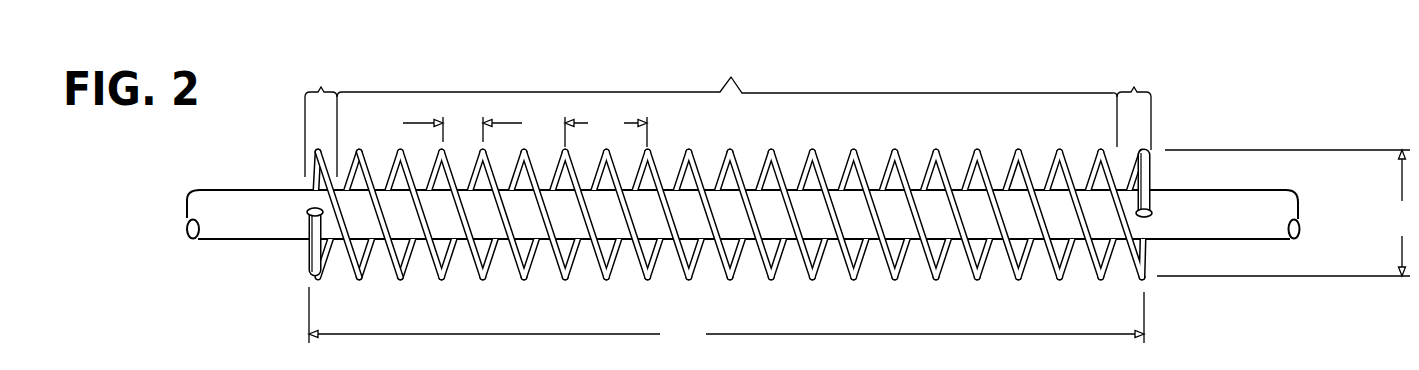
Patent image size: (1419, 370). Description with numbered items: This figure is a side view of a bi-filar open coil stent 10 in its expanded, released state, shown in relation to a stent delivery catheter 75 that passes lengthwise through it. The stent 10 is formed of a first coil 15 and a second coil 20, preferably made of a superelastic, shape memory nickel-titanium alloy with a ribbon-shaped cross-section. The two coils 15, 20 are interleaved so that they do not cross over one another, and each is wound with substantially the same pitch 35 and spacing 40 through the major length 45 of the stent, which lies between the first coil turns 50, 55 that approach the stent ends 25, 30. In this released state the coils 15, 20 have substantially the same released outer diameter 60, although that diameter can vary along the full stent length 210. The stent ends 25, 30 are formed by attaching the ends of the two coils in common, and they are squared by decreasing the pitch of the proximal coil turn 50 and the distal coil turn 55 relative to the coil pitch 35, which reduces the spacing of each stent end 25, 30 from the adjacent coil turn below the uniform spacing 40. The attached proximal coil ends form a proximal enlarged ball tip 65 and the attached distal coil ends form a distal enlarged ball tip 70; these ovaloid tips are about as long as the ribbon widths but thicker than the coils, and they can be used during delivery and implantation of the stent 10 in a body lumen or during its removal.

The bi-filar open coil stent 10 is at (862, 150).
The first coil 15 is at (352, 266).
The second coil 20 is at (400, 278).
The first or proximal stent end 25 is at (298, 262).
The second or distal stent end 30 is at (1157, 183).
The pitch 35 is at (606, 129).
The spacing 40 is at (462, 126).
The major length 45 is at (727, 70).
The first or proximal coil turn 50 is at (321, 118).
The second or distal coil turn 55 is at (1134, 108).
The released outer diameter 60 is at (1285, 213).
The proximal enlarged ball tip 65 is at (312, 208).
The distal enlarged ball tip 70 is at (1157, 218).
The stent delivery catheter 75 is at (200, 238).
The stent length 210 is at (726, 316).